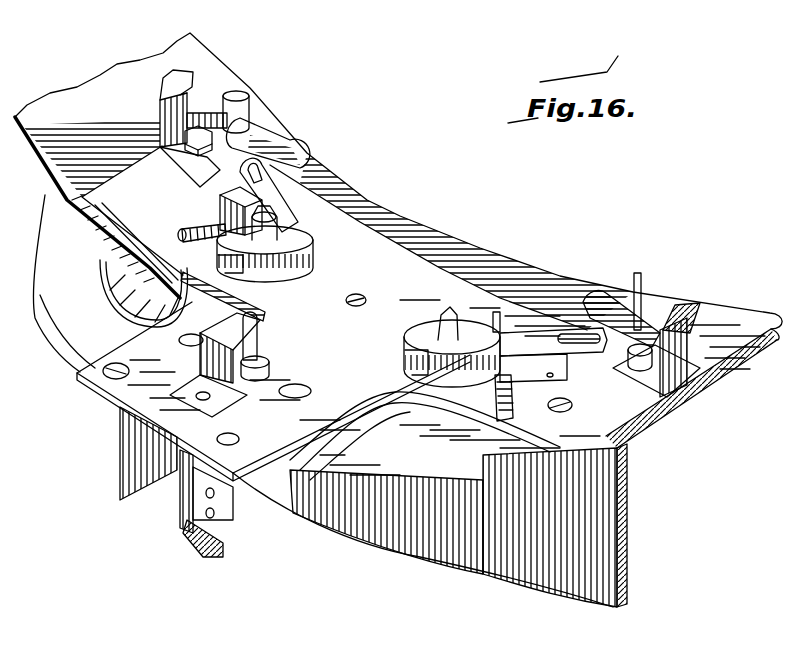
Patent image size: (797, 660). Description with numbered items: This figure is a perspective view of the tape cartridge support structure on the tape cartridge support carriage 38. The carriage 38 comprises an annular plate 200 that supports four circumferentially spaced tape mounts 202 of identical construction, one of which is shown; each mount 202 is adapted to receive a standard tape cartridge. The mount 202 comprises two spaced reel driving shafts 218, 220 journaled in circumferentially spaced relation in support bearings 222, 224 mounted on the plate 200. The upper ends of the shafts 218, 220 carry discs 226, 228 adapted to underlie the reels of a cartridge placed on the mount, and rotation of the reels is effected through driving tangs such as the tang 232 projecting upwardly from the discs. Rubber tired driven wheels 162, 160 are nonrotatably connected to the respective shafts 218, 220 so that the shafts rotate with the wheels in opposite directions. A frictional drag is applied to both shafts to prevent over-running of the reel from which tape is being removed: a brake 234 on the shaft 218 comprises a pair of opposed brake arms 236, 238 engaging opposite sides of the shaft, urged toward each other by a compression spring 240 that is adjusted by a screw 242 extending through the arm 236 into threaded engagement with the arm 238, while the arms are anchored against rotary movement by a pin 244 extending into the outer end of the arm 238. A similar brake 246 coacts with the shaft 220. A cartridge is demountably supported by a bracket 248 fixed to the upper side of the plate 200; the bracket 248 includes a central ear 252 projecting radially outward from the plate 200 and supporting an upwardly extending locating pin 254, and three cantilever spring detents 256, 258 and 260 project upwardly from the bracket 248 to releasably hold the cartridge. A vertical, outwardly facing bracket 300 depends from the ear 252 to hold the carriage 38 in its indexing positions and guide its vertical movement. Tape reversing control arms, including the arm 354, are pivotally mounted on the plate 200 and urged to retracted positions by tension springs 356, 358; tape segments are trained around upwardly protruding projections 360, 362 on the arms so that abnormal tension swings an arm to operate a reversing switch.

The annular plate 200 is at (91, 90).
The tape cartridge support carriage 38 is at (226, 52).
The tension spring 356 is at (200, 107).
The projection 360 is at (252, 122).
The tension spring 358 is at (280, 124).
The cantilever spring detent 258 is at (163, 109).
The pin 244 is at (311, 194).
The brake 234 is at (267, 193).
The brake arm 238 is at (307, 227).
The reel driving shaft 218 is at (403, 224).
The tape mount 202 is at (474, 234).
The brake arm 236 is at (222, 208).
The compression spring 240 is at (181, 236).
The screw 242 is at (108, 262).
The rubber tired driven wheel 162 is at (112, 292).
The cantilever spring detent 256 is at (135, 340).
The central ear 252 is at (108, 400).
The bracket 300 is at (183, 493).
The locating pin 254 is at (315, 418).
The bracket 248 is at (263, 443).
The driving tang 232 is at (314, 250).
The disc 226 is at (312, 266).
The support bearing 222 is at (278, 292).
The disc 228 is at (418, 336).
The reel driving shaft 220 is at (448, 310).
The brake 246 is at (312, 390).
The rubber tired driven wheel 160 is at (367, 447).
The support bearing 224 is at (451, 510).
The tape reversing control arm 354 is at (598, 290).
The projection 362 is at (643, 280).
The cantilever spring detent 260 is at (707, 342).